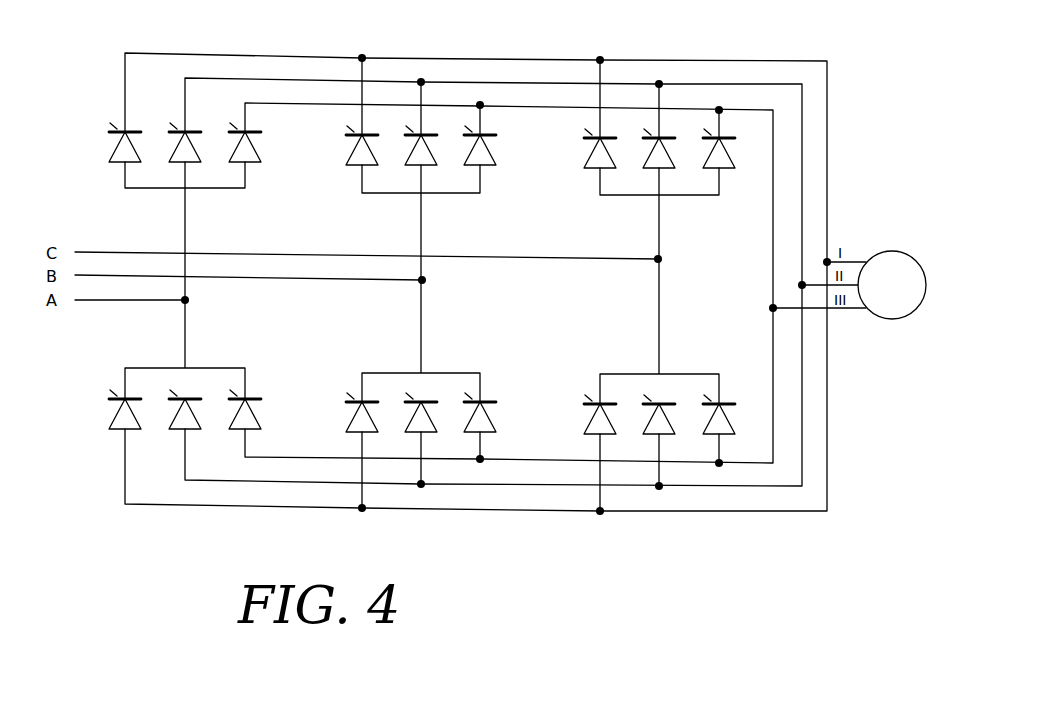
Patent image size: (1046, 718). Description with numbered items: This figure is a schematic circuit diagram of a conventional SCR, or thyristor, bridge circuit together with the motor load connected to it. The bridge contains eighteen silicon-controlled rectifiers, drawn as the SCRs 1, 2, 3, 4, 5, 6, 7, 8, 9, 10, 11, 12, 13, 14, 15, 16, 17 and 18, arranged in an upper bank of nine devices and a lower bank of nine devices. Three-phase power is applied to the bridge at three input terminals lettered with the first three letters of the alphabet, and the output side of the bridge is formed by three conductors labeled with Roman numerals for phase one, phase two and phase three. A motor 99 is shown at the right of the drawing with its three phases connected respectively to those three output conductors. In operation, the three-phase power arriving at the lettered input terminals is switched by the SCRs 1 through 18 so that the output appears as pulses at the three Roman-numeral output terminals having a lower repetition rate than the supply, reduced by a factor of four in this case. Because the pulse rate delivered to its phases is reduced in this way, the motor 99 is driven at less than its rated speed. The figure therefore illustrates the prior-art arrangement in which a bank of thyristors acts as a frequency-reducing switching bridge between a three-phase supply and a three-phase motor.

The SCR 1 is at (98, 137).
The SCR 2 is at (102, 422).
The SCR 3 is at (164, 139).
The SCR 4 is at (168, 420).
The SCR 5 is at (224, 139).
The SCR 6 is at (226, 422).
The SCR 7 is at (344, 146).
The SCR 8 is at (344, 420).
The SCR 9 is at (400, 146).
The SCR 10 is at (402, 426).
The SCR 11 is at (458, 146).
The SCR 12 is at (462, 426).
The SCR 13 is at (580, 150).
The SCR 14 is at (580, 428).
The SCR 15 is at (645, 148).
The SCR 16 is at (640, 430).
The SCR 17 is at (705, 150).
The SCR 18 is at (698, 430).
The motor 99 is at (910, 250).